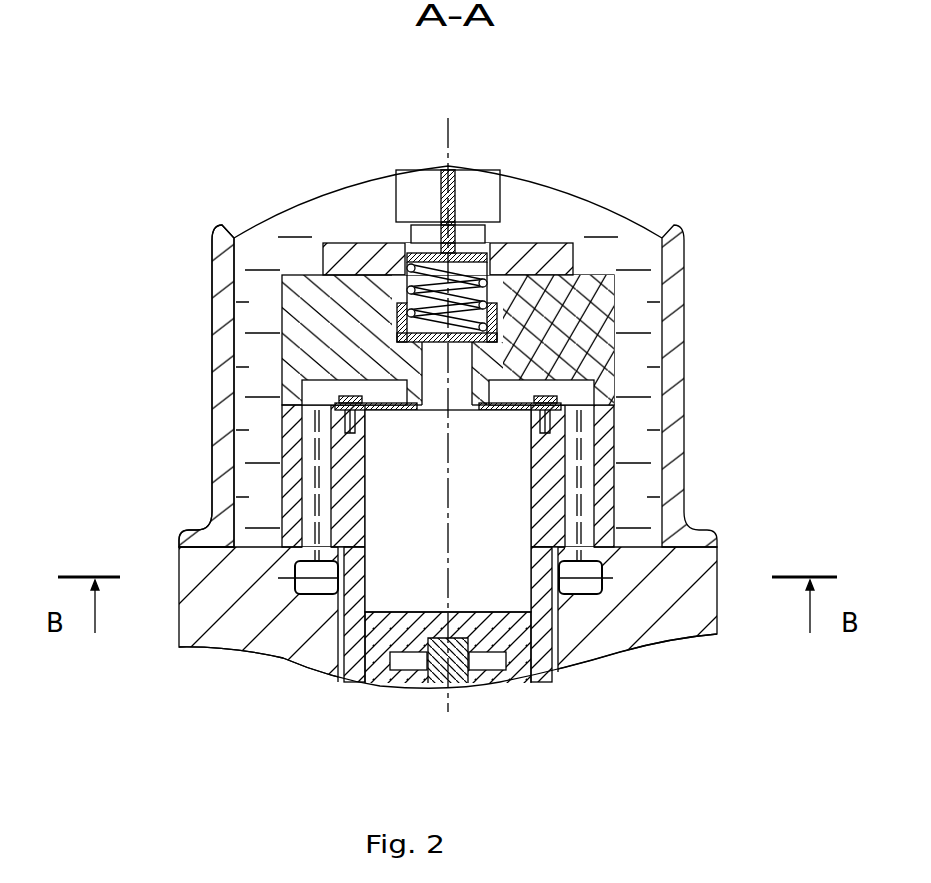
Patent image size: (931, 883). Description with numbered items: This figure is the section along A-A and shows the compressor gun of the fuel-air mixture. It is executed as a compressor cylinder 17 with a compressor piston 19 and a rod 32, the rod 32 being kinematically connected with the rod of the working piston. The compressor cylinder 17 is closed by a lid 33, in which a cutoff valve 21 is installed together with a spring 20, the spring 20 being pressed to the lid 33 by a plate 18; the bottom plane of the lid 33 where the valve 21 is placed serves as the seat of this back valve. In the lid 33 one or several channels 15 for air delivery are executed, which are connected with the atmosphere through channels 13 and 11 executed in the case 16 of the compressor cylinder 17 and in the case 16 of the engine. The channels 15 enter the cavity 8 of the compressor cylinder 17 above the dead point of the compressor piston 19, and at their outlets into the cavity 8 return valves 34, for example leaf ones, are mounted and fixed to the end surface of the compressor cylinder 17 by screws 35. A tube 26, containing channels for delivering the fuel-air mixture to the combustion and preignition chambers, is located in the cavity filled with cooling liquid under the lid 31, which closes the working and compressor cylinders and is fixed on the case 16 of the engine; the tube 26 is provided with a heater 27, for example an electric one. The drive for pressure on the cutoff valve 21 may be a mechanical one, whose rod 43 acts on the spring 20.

The cavity of the compressor cylinder 8 is at (476, 530).
The channel in the engine case 11 is at (318, 580).
The channel in the compressor cylinder case 13 is at (313, 475).
The channel for air delivery 15 is at (283, 303).
The case 16 is at (648, 610).
The compressor cylinder 17 is at (538, 667).
The plate 18 is at (463, 277).
The compressor piston 19 is at (373, 662).
The spring 20 is at (552, 255).
The cutoff valve 21 is at (493, 308).
The tube 26 is at (470, 231).
The heater 27 is at (422, 195).
The lid 31 is at (222, 315).
The rod 32 is at (455, 668).
The lid of the compressor cylinder 33 is at (315, 293).
The return valve 34 is at (343, 401).
The screw 35 is at (380, 393).
The rod 43 is at (449, 172).